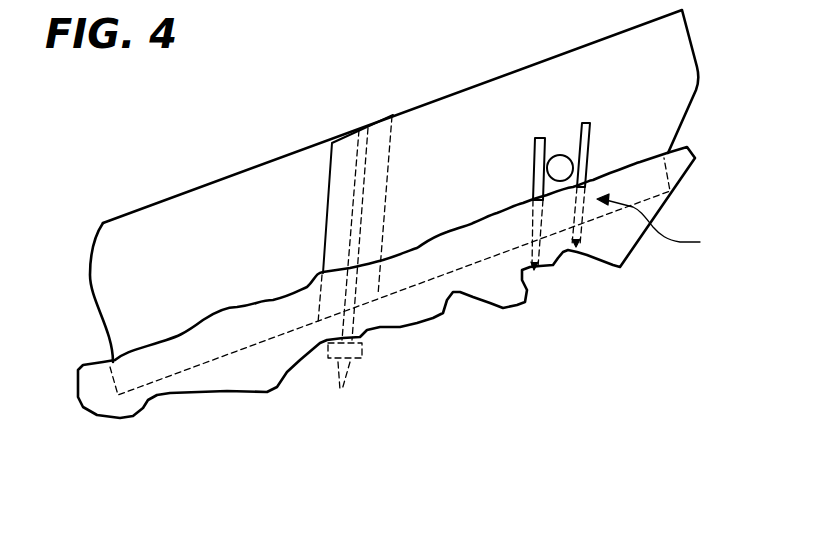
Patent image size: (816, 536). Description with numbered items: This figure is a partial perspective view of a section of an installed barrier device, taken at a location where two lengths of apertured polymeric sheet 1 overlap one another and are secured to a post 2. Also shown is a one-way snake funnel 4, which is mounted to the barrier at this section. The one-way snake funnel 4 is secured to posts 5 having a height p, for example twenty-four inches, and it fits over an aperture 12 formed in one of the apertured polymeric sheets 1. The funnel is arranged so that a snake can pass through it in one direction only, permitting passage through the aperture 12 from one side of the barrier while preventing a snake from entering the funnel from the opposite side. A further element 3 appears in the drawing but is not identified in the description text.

The apertured polymeric sheet 1 is at (120, 252).
The post 2 is at (363, 127).
The second panel 3 is at (708, 218).
The one-way snake funnel 4 is at (658, 226).
The posts 5 is at (533, 207).
The aperture 12 is at (557, 163).